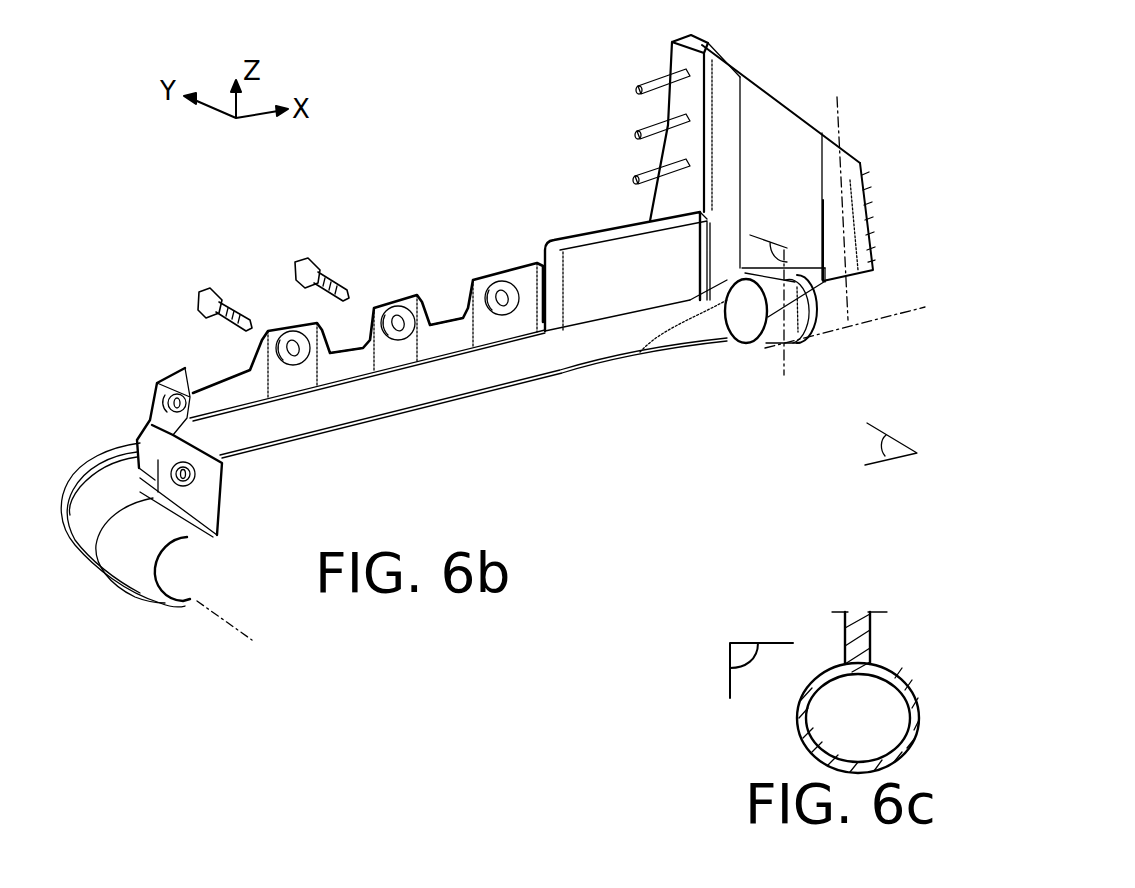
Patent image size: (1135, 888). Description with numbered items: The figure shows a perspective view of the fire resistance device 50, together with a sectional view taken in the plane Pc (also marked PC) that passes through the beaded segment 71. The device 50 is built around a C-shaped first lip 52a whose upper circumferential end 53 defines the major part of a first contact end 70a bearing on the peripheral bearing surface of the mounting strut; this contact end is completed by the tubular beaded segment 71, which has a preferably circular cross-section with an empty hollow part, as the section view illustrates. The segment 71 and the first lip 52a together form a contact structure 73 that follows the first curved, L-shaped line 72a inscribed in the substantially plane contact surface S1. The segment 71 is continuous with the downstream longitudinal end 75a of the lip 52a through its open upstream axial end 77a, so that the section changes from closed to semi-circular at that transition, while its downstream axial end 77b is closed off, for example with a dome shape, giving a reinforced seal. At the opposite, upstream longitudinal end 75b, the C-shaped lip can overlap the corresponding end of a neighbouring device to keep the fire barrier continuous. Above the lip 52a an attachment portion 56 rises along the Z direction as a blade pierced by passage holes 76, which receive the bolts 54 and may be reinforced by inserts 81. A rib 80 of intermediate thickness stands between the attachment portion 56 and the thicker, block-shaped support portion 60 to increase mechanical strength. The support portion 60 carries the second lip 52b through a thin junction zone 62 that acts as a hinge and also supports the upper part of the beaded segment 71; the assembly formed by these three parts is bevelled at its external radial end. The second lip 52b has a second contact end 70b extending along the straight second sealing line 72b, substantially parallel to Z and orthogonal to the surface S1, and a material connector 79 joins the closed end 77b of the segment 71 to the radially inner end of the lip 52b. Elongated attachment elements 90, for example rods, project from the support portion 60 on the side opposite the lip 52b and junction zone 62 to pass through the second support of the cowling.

In FIG. 6b, the fire resistance device 50 is at (876, 68).
In FIG. 6b, the first lip 52a is at (587, 355).
In FIG. 6b, the second lip 52b is at (830, 183).
In FIG. 6b, the circumferential end 53 is at (310, 442).
In FIG. 6b, the bolt 54 is at (197, 300).
In FIG. 6b, the attachment portion 56 is at (413, 297).
In FIG. 6b, the support portion 60 is at (710, 92).
In FIG. 6b, the junction zone 62 is at (755, 110).
In FIG. 6c, the junction zone 62 is at (873, 637).
In FIG. 6b, the first contact end 70a is at (434, 408).
In FIG. 6b, the second contact end 70b is at (858, 246).
In FIG. 6b, the beaded segment 71 is at (770, 337).
In FIG. 6c, the beaded segment 71 is at (800, 725).
In FIG. 6b, the first curved line 72a is at (920, 310).
In FIG. 6b, the second sealing line 72b is at (837, 97).
In FIG. 6b, the contact structure 73 is at (735, 428).
In FIG. 6b, the downstream longitudinal end 75a is at (737, 302).
In FIG. 6b, the upstream longitudinal end 75b is at (150, 603).
In FIG. 6b, the passage hole 76 is at (280, 327).
In FIG. 6b, the open upstream axial end 77a is at (733, 303).
In FIG. 6b, the downstream axial end 77b is at (813, 298).
In FIG. 6b, the material connector 79 is at (827, 268).
In FIG. 6b, the rib 80 is at (597, 262).
In FIG. 6b, the insert 81 is at (303, 353).
In FIG. 6b, the elongated attachment element 90 is at (635, 175).
In FIG. 6b, the sectional plane Pc is at (785, 372).
In FIG. 6c, the sectional plane PC is at (745, 645).
In FIG. 6b, the first contact surface S1 is at (897, 447).